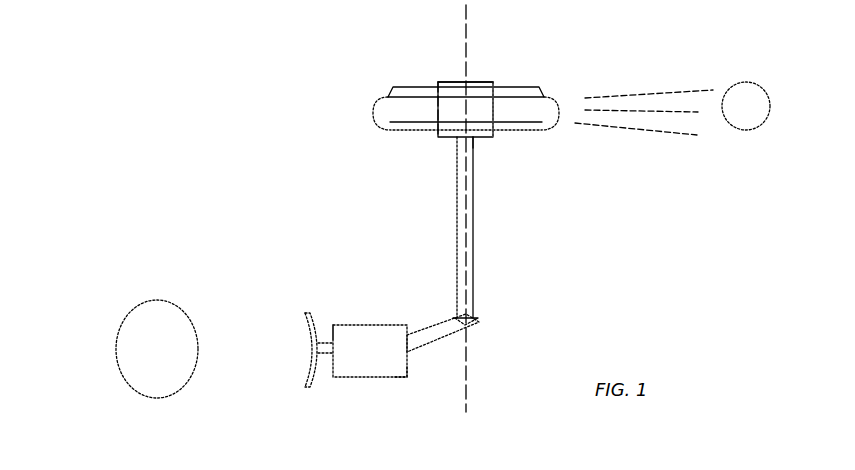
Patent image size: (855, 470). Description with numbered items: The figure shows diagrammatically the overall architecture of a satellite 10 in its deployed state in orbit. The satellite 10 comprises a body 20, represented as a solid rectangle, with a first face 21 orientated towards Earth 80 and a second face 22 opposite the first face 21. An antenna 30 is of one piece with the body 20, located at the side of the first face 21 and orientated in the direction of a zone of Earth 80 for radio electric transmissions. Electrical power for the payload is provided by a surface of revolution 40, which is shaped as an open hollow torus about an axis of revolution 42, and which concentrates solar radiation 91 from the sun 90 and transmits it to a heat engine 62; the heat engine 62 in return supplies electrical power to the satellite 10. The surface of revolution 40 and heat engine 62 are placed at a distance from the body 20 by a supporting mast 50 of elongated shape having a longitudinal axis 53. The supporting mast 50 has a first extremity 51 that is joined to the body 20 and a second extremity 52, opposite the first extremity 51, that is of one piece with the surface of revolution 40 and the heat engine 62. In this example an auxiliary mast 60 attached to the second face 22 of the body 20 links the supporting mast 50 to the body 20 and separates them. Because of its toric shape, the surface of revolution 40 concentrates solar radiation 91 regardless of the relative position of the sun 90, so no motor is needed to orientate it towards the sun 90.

The satellite 10 is at (173, 103).
The body 20 is at (365, 377).
The first face 21 is at (333, 325).
The second face 22 is at (412, 362).
The antenna 30 is at (305, 376).
The surface of revolution 40 is at (370, 77).
The axis of revolution 42 is at (462, 60).
The supporting mast 50 is at (474, 233).
The first extremity 51 is at (472, 316).
The second extremity 52 is at (478, 140).
The longitudinal axis 53 is at (467, 22).
The auxiliary mast 60 is at (436, 328).
The heat engine 62 is at (448, 82).
The Earth 80 is at (116, 343).
The sun 90 is at (745, 100).
The solar radiation 91 is at (645, 92).